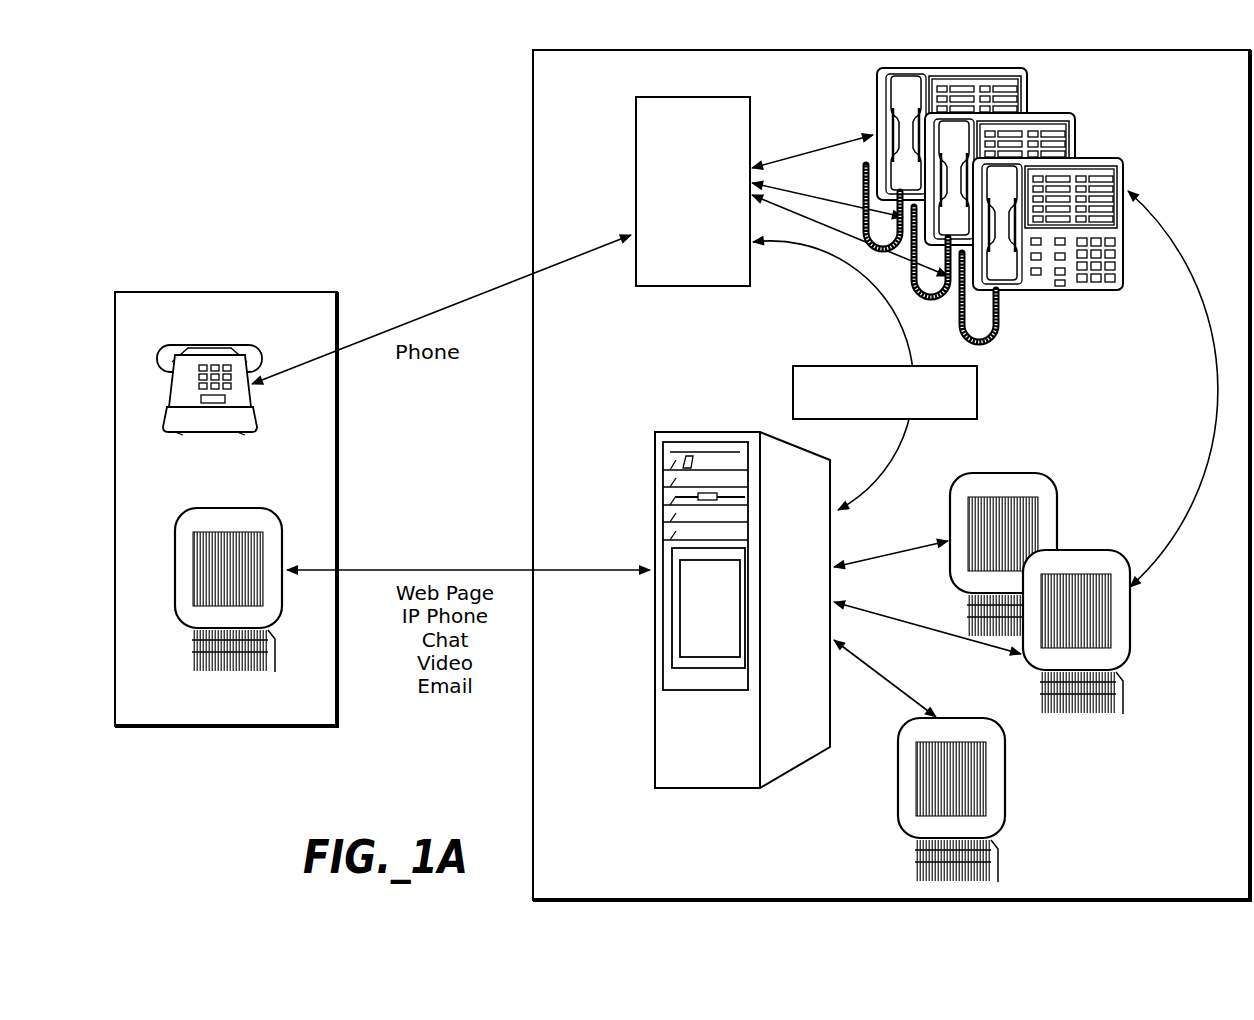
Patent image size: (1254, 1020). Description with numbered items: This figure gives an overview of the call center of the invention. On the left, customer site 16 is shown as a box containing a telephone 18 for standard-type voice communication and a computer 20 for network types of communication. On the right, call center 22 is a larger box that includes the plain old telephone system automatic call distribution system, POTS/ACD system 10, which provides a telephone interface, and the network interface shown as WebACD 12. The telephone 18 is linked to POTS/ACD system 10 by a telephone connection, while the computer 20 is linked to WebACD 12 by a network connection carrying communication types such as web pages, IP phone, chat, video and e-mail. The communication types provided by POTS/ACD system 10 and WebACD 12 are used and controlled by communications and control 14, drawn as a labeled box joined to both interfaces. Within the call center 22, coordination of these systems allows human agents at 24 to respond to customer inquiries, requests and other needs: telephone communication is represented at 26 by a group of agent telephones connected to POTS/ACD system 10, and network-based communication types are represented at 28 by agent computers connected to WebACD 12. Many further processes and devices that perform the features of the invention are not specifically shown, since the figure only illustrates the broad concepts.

The POTS/ACD system 10 is at (702, 288).
The WebACD 12 is at (684, 432).
The communications and control 14 is at (925, 420).
The customer site 16 is at (297, 292).
The telephone 18 is at (216, 344).
The computer 20 is at (229, 507).
The call center 22 is at (533, 172).
The human agents 24 is at (1147, 399).
The telephone communication 26 is at (1122, 149).
The network-based communication types 28 is at (1095, 725).